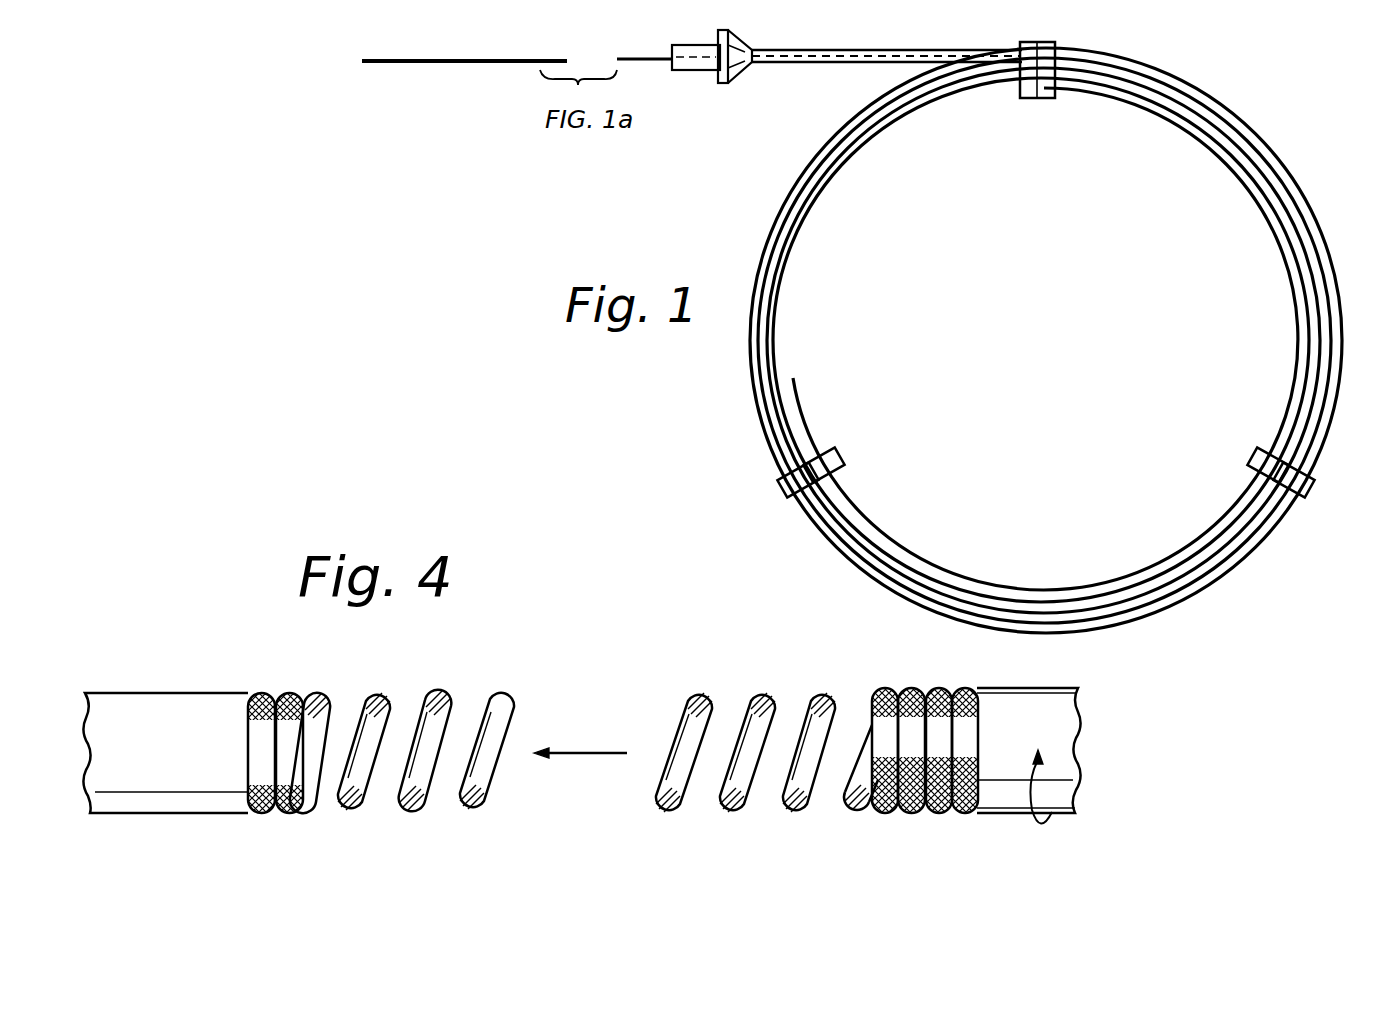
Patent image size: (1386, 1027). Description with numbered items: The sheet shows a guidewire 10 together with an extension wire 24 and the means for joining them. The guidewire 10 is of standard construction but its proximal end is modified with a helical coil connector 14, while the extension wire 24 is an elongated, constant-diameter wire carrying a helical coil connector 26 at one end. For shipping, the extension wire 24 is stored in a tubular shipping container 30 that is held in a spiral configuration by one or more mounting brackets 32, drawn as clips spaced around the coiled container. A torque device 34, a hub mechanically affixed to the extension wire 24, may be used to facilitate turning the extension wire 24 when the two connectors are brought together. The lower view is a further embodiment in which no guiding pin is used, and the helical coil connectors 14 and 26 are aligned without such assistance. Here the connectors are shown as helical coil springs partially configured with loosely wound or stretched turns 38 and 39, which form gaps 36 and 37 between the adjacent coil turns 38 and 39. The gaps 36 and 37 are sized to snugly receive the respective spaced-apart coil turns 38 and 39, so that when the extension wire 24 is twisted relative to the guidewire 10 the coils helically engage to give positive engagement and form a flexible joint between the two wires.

In FIG. 1, the guidewire 10 is at (460, 63).
In FIG. 4, the guidewire 10 is at (180, 693).
In FIG. 1, the helical coil connector 14 is at (568, 58).
In FIG. 4, the helical coil connector 14 is at (458, 692).
In FIG. 1, the extension wire 24 is at (660, 61).
In FIG. 4, the extension wire 24 is at (1076, 683).
In FIG. 1, the helical coil connector 26 is at (622, 56).
In FIG. 4, the helical coil connector 26 is at (838, 692).
In FIG. 1, the tubular shipping container 30 is at (987, 582).
In FIG. 1, the mounting bracket 32 is at (1040, 98).
In FIG. 1, the torque device 34 is at (735, 82).
In FIG. 4, the gap 36 is at (394, 825).
In FIG. 4, the gap 37 is at (745, 810).
In FIG. 4, the coil turn 38 is at (420, 805).
In FIG. 4, the coil turn 39 is at (782, 650).